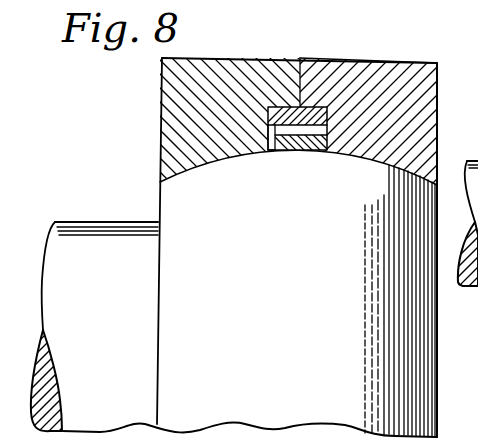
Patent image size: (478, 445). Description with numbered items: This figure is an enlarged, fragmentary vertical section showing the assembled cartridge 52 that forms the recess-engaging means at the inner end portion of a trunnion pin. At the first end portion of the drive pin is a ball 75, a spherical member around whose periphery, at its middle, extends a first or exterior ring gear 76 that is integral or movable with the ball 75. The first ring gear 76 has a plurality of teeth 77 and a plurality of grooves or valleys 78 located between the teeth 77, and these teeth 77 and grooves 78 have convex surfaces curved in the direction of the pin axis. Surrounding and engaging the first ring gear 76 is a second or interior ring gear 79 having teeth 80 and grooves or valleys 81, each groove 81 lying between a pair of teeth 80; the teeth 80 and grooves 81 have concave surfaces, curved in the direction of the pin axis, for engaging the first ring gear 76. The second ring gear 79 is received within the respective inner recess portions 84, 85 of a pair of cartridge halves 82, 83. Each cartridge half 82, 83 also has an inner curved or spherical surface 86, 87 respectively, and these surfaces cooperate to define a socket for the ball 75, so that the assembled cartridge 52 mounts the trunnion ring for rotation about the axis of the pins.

The cartridge 52 is at (313, 59).
The ball 75 is at (327, 262).
The first ring gear 76 is at (301, 144).
The teeth 77 is at (330, 123).
The grooves 78 is at (270, 133).
The second ring gear 79 is at (276, 117).
The teeth 80 is at (328, 138).
The grooves 81 is at (316, 106).
The cartridge half 82 is at (179, 91).
The cartridge half 83 is at (428, 104).
The inner recess portion 84 is at (287, 107).
The inner recess portion 85 is at (308, 92).
The spherical surface 86 is at (228, 160).
The spherical surface 87 is at (372, 172).